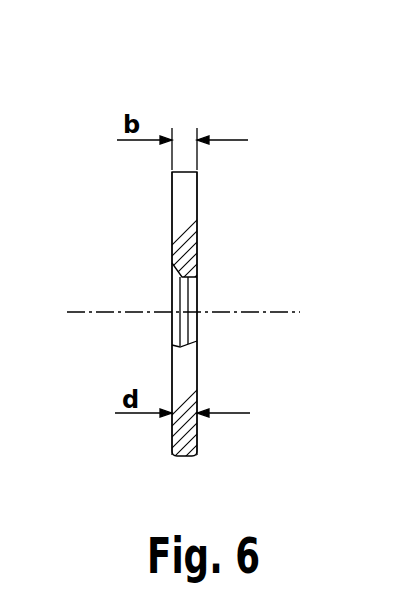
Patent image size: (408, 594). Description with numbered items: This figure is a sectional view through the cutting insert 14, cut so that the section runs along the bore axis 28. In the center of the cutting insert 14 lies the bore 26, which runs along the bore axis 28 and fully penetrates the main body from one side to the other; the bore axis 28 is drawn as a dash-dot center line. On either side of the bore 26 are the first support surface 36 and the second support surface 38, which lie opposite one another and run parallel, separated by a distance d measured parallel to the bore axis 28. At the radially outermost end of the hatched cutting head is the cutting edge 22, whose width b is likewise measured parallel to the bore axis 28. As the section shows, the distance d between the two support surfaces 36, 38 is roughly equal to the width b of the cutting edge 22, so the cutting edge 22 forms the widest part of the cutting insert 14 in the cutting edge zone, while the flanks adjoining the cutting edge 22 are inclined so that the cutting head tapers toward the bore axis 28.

The cutting insert 14 is at (270, 126).
The cutting edge 22 is at (180, 170).
The bore 26 is at (190, 293).
The bore axis 28 is at (83, 315).
The first support surface 36 is at (172, 253).
The second support surface 38 is at (198, 250).